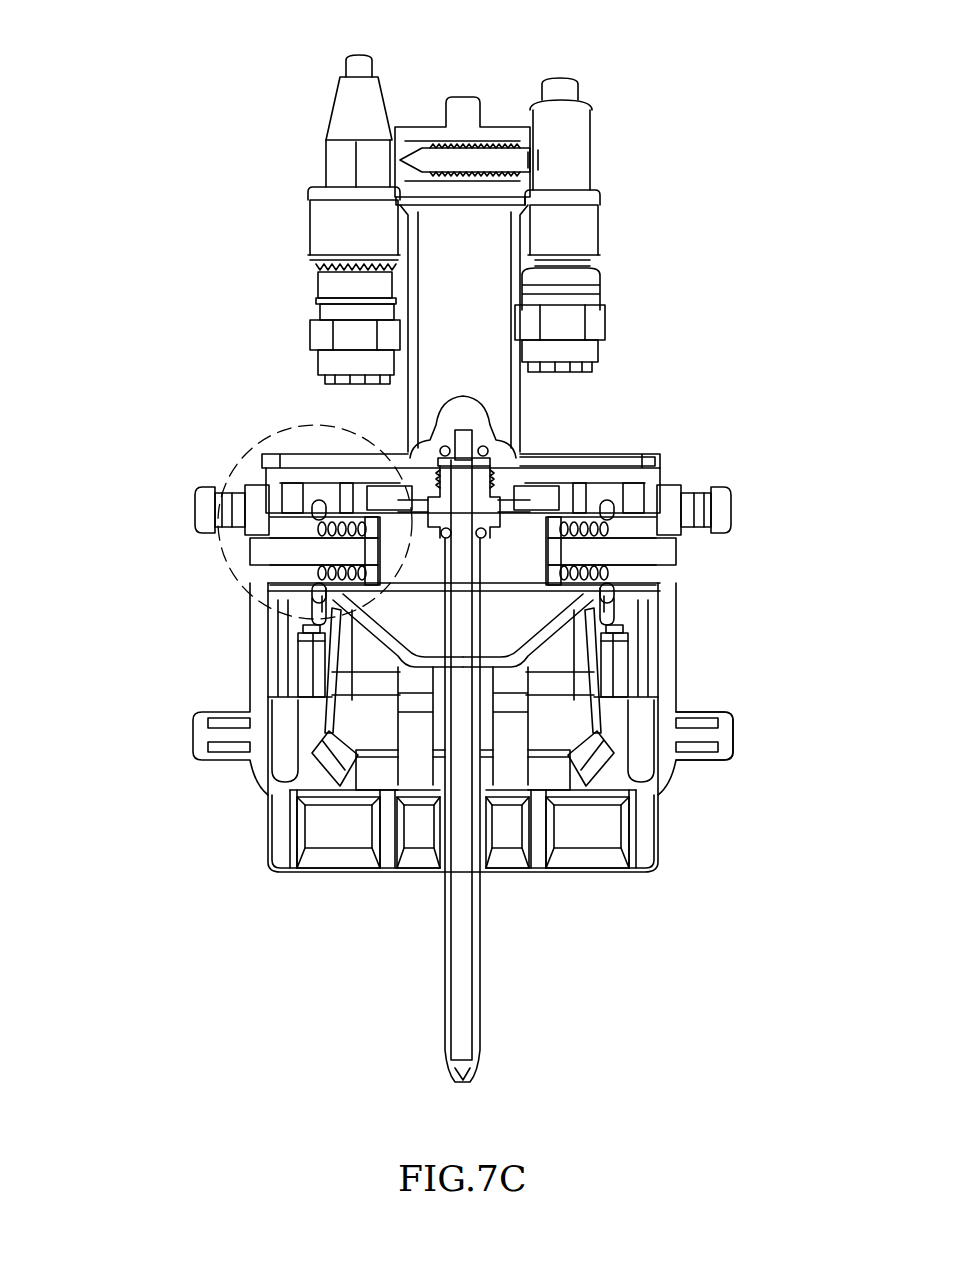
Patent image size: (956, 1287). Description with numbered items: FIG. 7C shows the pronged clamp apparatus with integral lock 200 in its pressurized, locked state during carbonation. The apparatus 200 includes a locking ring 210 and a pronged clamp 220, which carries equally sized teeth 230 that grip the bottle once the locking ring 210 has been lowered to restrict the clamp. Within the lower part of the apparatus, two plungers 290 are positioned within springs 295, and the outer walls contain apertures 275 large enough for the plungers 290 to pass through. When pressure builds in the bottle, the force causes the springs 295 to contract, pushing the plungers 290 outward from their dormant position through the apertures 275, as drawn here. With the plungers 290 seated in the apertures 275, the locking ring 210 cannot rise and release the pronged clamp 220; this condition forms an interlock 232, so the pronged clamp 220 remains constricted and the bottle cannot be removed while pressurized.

The pronged clamp apparatus with integral lock 200 is at (188, 138).
The locking ring 210 is at (705, 735).
The pronged clamp 220 is at (606, 603).
The teeth 230 is at (328, 800).
The interlock 232 is at (313, 428).
The apertures 275 is at (245, 527).
The plungers 290 is at (247, 533).
The springs 295 is at (592, 455).